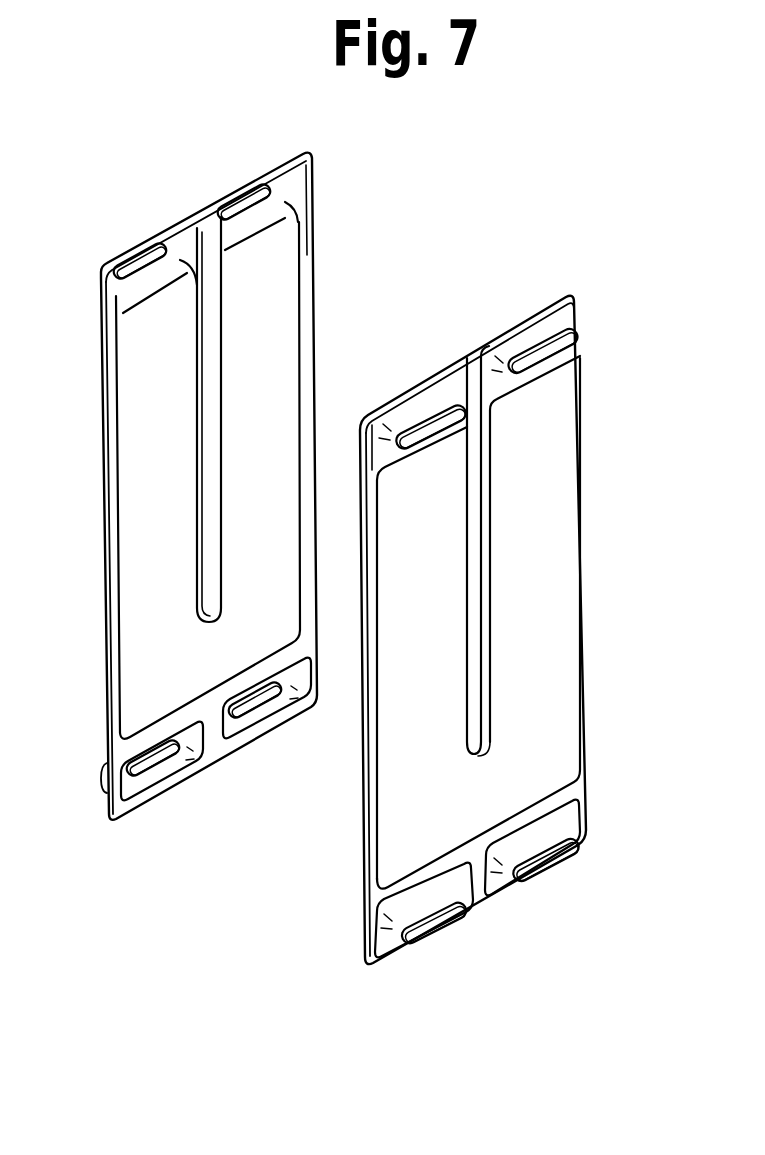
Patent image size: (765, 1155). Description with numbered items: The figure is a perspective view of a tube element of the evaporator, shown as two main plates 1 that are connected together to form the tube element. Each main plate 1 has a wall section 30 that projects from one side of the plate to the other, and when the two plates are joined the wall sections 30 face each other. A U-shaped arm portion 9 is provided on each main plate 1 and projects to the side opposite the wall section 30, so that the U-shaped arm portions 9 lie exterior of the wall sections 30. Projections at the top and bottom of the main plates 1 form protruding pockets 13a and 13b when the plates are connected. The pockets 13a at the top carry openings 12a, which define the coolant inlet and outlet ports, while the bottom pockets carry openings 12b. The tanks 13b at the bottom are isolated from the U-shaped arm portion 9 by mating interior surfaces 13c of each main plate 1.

The main plate 1 is at (105, 462).
The U-shaped arm portion 9 is at (565, 578).
The wall section 30 is at (213, 443).
The opening 12a is at (438, 420).
The protruding pocket 13a is at (402, 404).
The opening 12b is at (572, 855).
The protruding pocket (tank) 13b is at (572, 810).
The mating interior surface 13c is at (217, 752).